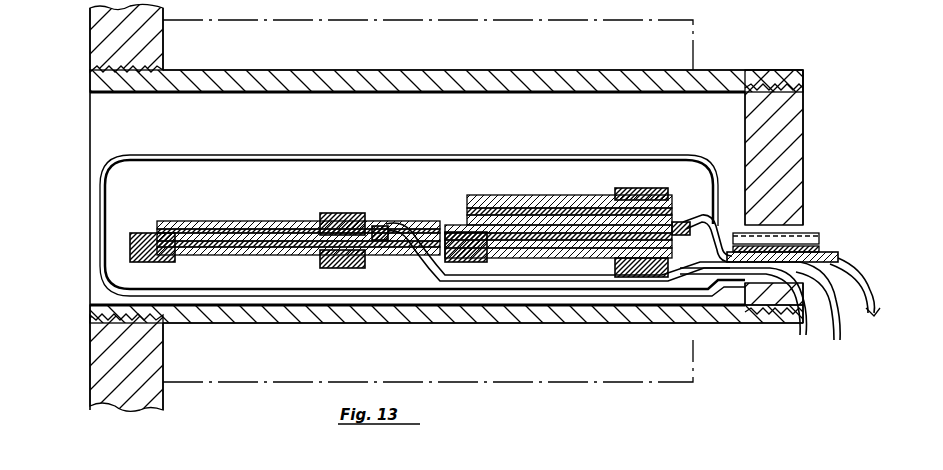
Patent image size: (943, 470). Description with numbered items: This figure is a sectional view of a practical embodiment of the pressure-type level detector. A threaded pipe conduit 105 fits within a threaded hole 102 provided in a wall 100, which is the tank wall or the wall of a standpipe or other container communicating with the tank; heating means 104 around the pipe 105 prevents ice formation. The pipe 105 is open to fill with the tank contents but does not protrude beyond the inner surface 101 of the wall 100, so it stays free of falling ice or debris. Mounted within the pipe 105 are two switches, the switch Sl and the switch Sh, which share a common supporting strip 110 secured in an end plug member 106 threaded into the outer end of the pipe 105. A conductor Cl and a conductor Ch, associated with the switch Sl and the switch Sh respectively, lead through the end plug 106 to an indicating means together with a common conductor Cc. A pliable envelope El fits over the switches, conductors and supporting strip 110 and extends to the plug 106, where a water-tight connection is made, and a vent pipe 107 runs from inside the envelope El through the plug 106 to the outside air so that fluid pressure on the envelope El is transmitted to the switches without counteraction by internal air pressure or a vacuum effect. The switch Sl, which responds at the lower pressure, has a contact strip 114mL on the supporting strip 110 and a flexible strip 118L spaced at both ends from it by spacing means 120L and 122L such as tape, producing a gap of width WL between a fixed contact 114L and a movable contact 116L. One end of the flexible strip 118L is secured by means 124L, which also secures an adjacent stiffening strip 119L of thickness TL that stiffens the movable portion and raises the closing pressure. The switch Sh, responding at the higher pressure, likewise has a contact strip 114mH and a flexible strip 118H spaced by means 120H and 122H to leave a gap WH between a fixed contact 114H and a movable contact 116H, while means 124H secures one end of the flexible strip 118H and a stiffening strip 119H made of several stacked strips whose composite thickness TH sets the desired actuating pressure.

The wall 100 is at (100, 38).
The inner surface 101 is at (100, 355).
The threaded hole 102 is at (90, 72).
The heating means 104 is at (705, 53).
The threaded pipe conduit 105 is at (256, 70).
The end plug member 106 is at (808, 114).
The vent pipe 107 is at (806, 236).
The supporting strip 110 is at (398, 252).
The fixed contact 114L is at (248, 250).
The contact strip 114mL is at (286, 250).
The fixed contact 114H is at (540, 250).
The contact strip 114mH is at (576, 250).
The movable contact 116L is at (270, 214).
The movable contact 116H is at (522, 215).
The flexible strip 118L is at (278, 218).
The flexible strip 118H is at (596, 195).
The stiffening strip 119L is at (168, 221).
The stiffening strip 119H is at (570, 208).
The spacing means 120L is at (134, 240).
The spacing means 120H is at (436, 228).
The spacing means 122L is at (376, 226).
The spacing means 122H is at (686, 222).
The securing means 124L is at (332, 213).
The securing means 124H is at (630, 188).
The thickness TL is at (150, 229).
The gap width WL is at (210, 268).
The composite thickness TH is at (462, 196).
The gap width WH is at (502, 270).
The switch Sl is at (264, 170).
The switch Sh is at (486, 130).
The pliable envelope El is at (404, 150).
The conductor Cl is at (743, 317).
The conductor Ch is at (788, 317).
The common conductor Cc is at (856, 302).